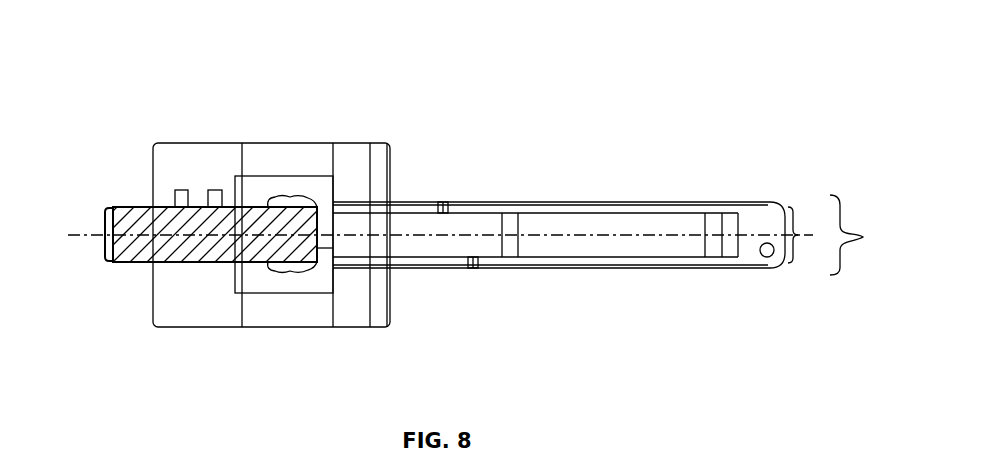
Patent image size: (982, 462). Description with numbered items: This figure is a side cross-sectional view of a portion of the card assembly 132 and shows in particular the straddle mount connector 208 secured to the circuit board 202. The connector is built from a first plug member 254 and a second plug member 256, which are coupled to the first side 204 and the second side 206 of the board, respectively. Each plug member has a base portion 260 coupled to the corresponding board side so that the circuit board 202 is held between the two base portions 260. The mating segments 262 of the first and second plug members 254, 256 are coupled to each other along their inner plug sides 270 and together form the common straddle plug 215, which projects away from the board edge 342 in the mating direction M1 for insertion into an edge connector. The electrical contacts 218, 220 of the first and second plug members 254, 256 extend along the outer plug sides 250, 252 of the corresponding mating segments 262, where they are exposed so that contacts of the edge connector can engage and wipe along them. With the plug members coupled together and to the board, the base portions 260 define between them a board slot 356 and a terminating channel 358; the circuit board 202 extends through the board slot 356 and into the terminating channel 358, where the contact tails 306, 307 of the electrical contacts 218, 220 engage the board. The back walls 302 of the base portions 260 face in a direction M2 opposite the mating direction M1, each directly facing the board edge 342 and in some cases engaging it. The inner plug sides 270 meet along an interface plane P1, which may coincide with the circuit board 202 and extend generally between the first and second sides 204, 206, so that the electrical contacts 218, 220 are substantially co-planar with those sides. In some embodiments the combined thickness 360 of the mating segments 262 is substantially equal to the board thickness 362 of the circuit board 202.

The card assembly 132 is at (663, 58).
The circuit board 202 is at (118, 207).
The first side 204 is at (140, 200).
The second side 206 is at (130, 268).
The straddle mount connector 208 is at (423, 123).
The common straddle plug 215 is at (856, 245).
The electrical contacts 218 is at (538, 205).
The electrical contacts 220 is at (628, 259).
The outer plug side 250 is at (490, 198).
The outer plug side 252 is at (480, 272).
The first plug member 254 is at (355, 143).
The second plug member 256 is at (350, 327).
The base portions 260 is at (220, 143).
The mating segments 262 is at (648, 202).
The inner plug sides 270 is at (597, 228).
The back walls 302 is at (330, 245).
The contact tails 306 is at (322, 202).
The contact tails 307 is at (290, 282).
The board edge 342 is at (327, 248).
The board slot 356 is at (168, 200).
The terminating channel 358 is at (277, 183).
The combined thickness 360 is at (798, 226).
The board thickness 362 is at (103, 222).
The interface plane P1 is at (80, 238).
The mating direction M1 is at (733, 98).
The direction opposite the mating direction M2 is at (300, 27).